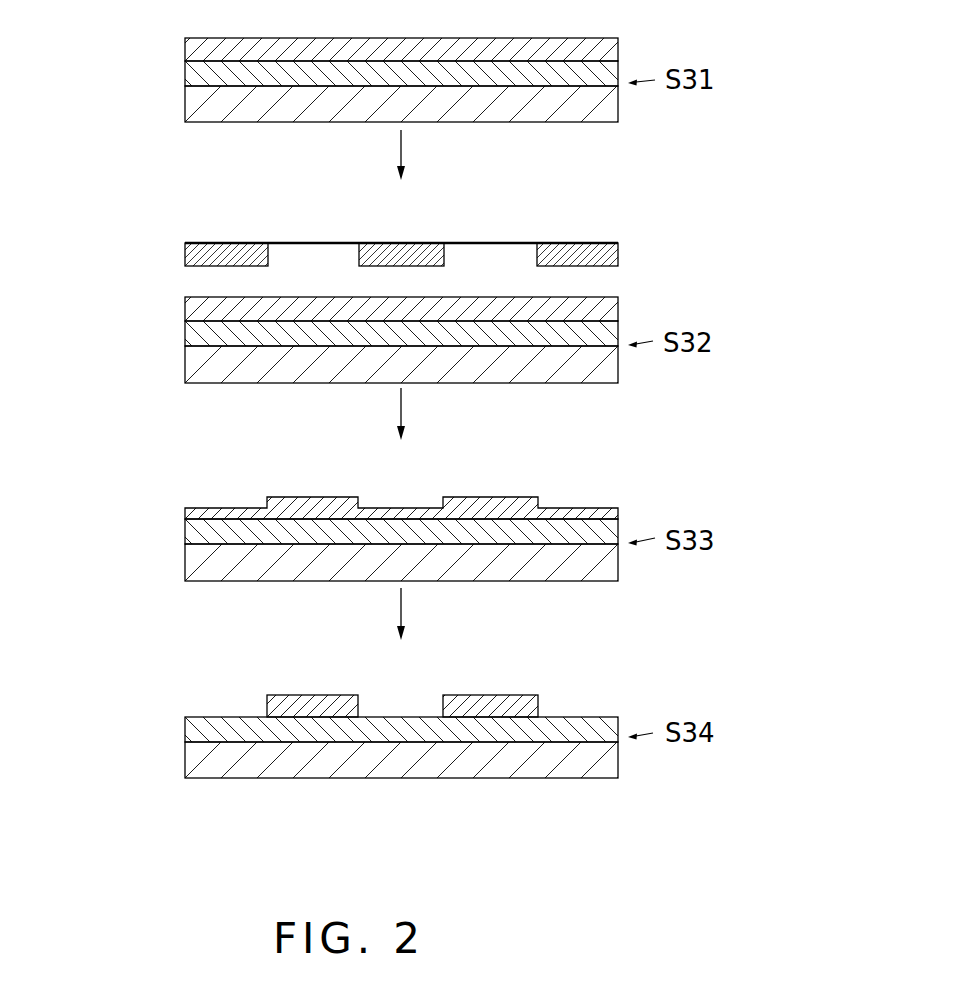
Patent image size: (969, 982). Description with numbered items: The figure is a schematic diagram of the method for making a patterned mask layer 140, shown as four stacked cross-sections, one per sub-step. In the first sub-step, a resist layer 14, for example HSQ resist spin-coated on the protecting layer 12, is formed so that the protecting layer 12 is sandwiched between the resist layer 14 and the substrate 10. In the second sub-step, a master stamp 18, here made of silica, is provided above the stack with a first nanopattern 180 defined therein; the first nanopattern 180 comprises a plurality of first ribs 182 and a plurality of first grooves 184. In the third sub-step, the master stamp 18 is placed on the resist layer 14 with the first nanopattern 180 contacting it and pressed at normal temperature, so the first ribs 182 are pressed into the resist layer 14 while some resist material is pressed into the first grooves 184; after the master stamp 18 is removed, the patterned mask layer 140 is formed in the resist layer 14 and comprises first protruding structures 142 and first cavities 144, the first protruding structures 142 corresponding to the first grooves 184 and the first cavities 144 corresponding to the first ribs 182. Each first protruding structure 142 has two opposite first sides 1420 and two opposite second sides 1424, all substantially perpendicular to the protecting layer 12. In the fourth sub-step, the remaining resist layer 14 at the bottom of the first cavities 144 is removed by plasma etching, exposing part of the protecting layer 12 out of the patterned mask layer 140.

The substrate 10 is at (208, 113).
The protecting layer 12 is at (200, 74).
The resist layer 14 is at (193, 52).
The master stamp 18 is at (287, 242).
The first nanopattern 180 is at (101, 230).
The first ribs 182 is at (203, 259).
The first grooves 184 is at (285, 260).
The patterned mask layer 140 is at (324, 621).
The first protruding structures 142 is at (283, 497).
The first cavities 144 is at (377, 499).
The first sides 1420 is at (265, 712).
The second sides 1424 is at (310, 705).